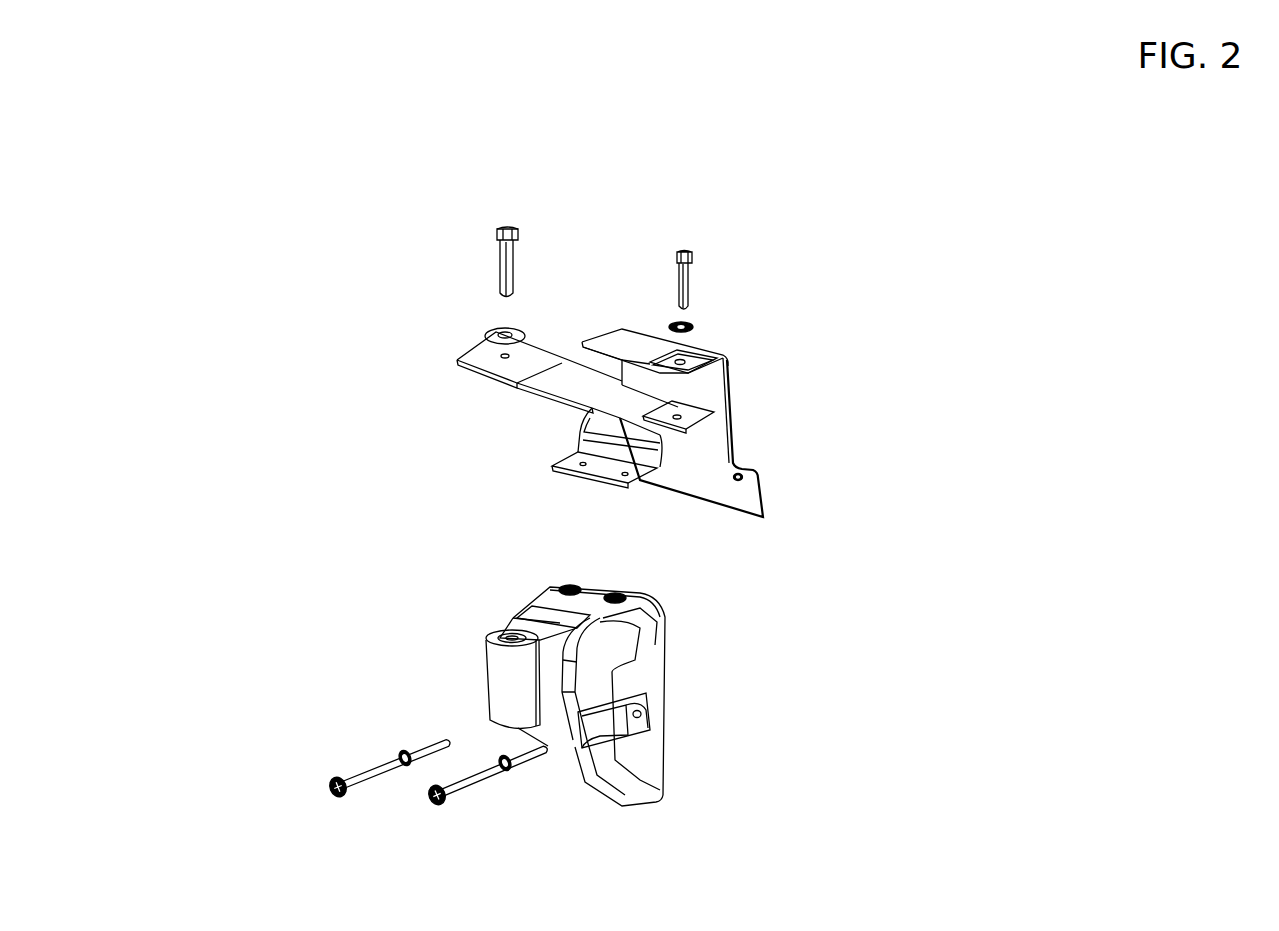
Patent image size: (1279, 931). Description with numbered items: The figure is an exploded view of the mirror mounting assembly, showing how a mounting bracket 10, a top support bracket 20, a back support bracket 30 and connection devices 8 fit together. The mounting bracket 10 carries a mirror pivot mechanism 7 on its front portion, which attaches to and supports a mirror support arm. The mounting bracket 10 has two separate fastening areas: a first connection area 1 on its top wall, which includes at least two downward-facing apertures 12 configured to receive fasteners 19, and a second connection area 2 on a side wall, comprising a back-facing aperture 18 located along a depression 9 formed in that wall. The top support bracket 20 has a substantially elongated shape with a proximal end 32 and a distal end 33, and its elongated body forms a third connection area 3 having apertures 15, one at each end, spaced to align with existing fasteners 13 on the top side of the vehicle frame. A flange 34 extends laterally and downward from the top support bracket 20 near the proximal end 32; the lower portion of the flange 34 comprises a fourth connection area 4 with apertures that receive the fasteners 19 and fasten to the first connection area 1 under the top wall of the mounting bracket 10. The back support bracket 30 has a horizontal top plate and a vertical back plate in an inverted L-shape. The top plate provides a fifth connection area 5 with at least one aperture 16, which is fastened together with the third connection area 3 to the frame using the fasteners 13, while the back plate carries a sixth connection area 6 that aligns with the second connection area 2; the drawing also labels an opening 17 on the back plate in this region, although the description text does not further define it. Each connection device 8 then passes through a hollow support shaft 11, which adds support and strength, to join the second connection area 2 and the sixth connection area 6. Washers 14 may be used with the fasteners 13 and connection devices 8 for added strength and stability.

The first connection area 1 is at (602, 583).
The second connection area 2 is at (670, 728).
The third connection area 3 is at (540, 398).
The fourth connection area 4 is at (577, 480).
The fifth connection area 5 is at (695, 342).
The sixth connection area 6 is at (773, 497).
The mirror pivot mechanism 7 is at (498, 662).
The connection device 8 is at (370, 773).
The depression 9 is at (593, 740).
The mounting bracket 10 is at (300, 528).
The support shaft 11 is at (432, 747).
The downward-facing aperture 12 is at (565, 583).
The fastener 13 is at (500, 247).
The washer 14 is at (500, 333).
The aperture 15 is at (502, 360).
The aperture 16 is at (698, 355).
The hole 17 is at (753, 472).
The back-facing aperture 18 is at (640, 712).
The fastener 19 is at (553, 590).
The top support bracket 20 is at (400, 268).
The back support bracket 30 is at (820, 258).
The proximal end 32 is at (692, 432).
The distal end 33 is at (462, 350).
The flange 34 is at (588, 447).